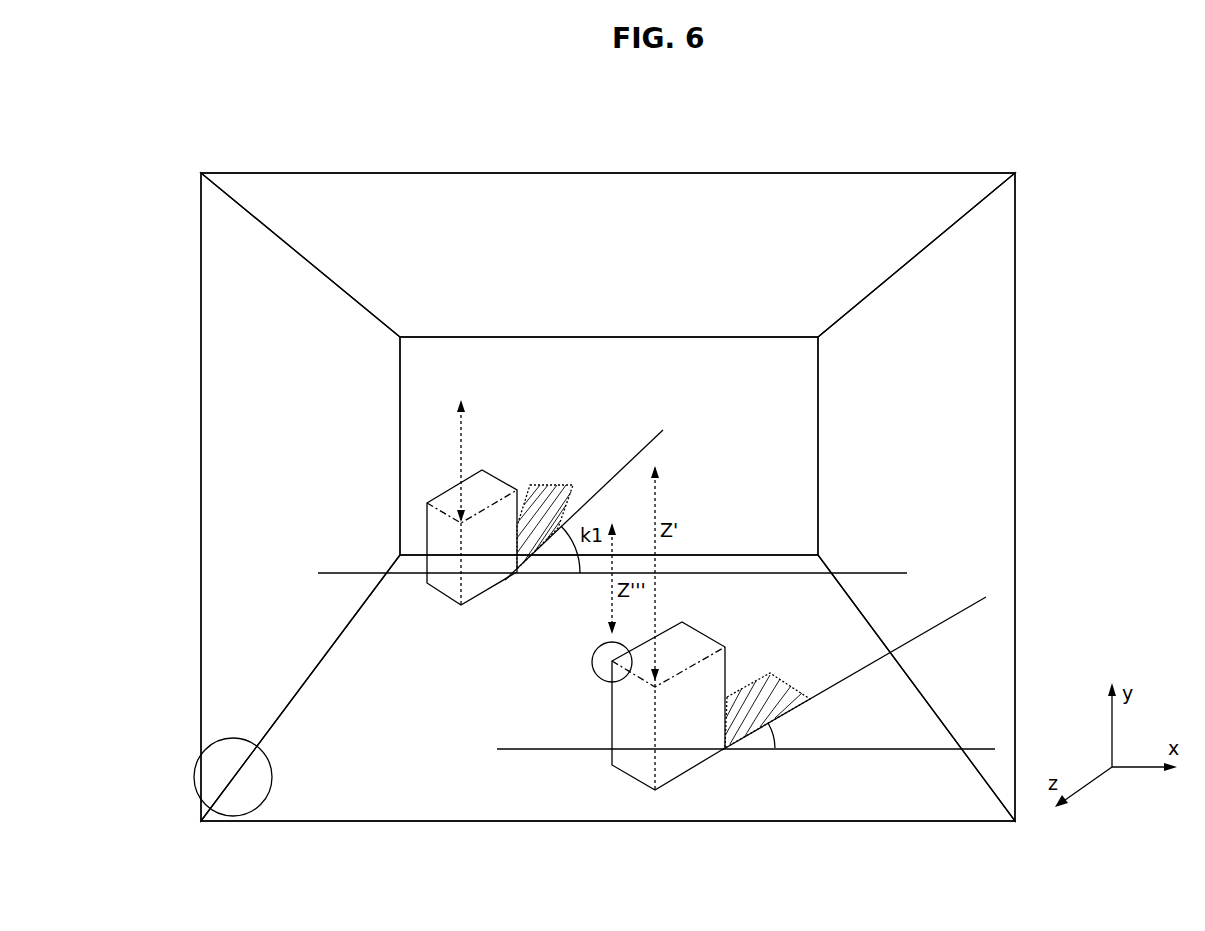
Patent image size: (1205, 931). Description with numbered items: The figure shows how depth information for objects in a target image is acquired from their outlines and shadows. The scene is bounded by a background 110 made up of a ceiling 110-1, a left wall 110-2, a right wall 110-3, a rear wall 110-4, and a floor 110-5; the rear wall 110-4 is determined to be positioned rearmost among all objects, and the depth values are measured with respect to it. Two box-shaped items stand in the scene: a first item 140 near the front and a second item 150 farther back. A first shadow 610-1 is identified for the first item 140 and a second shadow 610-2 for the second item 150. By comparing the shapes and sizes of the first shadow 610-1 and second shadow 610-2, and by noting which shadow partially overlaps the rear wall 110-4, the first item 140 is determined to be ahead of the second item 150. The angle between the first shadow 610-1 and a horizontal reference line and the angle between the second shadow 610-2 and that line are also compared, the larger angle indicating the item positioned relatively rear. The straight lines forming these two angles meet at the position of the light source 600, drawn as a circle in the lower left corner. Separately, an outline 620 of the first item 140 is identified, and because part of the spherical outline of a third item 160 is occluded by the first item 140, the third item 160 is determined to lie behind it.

The background 110 is at (816, 188).
The ceiling 110-1 is at (608, 255).
The left wall 110-2 is at (300, 497).
The right wall 110-3 is at (916, 497).
The rear wall 110-4 is at (609, 446).
The floor 110-5 is at (608, 688).
The second item 150 is at (441, 584).
The third item 160 is at (598, 652).
The first item 140 is at (690, 770).
The light source 600 is at (272, 777).
The first shadow 610-1 is at (773, 678).
The second shadow 610-2 is at (548, 487).
The outline 620 is at (620, 718).